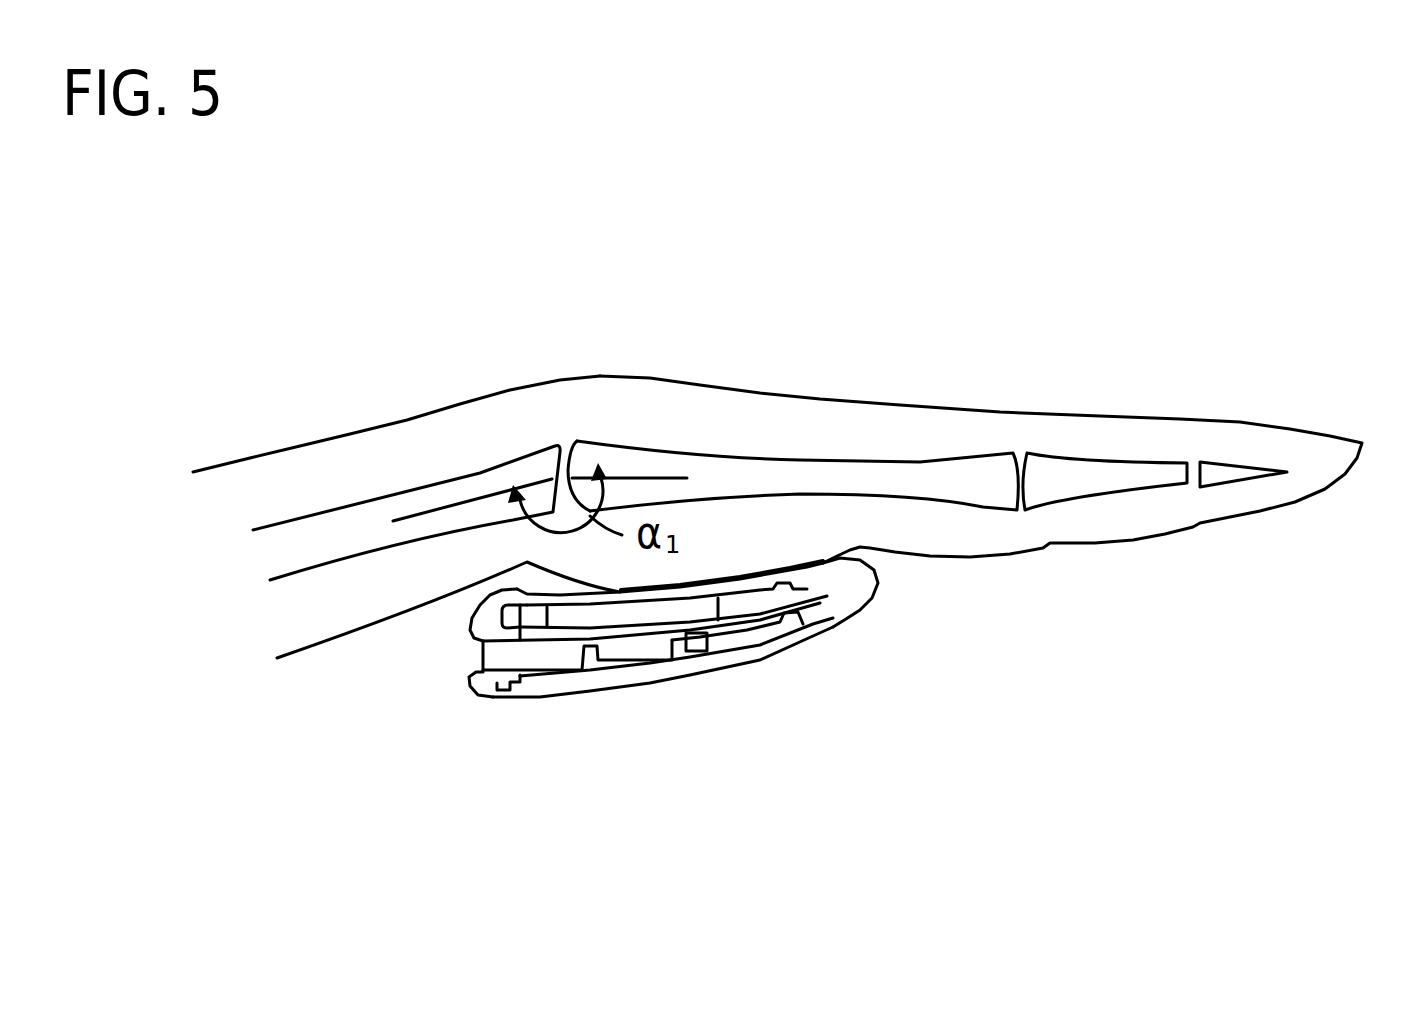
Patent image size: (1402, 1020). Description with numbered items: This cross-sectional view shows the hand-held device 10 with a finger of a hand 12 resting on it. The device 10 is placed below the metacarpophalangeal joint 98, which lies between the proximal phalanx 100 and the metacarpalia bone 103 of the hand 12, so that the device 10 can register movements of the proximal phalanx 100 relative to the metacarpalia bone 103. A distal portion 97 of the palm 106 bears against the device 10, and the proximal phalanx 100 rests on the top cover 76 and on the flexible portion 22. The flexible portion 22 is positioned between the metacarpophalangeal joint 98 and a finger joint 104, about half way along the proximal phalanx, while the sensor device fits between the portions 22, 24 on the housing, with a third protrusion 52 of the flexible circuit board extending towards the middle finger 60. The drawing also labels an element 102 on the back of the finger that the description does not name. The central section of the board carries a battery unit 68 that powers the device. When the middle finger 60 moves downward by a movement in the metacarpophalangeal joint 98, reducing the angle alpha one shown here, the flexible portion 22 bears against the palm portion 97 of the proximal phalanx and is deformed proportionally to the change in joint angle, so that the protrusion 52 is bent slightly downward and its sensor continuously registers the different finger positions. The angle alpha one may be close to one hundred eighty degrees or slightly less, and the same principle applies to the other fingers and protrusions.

The device 10 is at (664, 545).
The hand 12 is at (777, 517).
The flexible portion 22 is at (847, 610).
The portion 24 is at (490, 678).
The third protrusion 52 is at (823, 600).
The middle finger 60 is at (883, 435).
The battery unit 68 is at (692, 609).
The top cover 76 is at (480, 610).
The distal portion of the palm 97 is at (710, 582).
The metacarpophalangeal joint 98 is at (570, 472).
The proximal phalanx 100 is at (793, 395).
The skin 102 is at (510, 413).
The metacarpalia bone 103 is at (377, 515).
The finger joint 104 is at (1029, 468).
The palm 106 is at (322, 603).